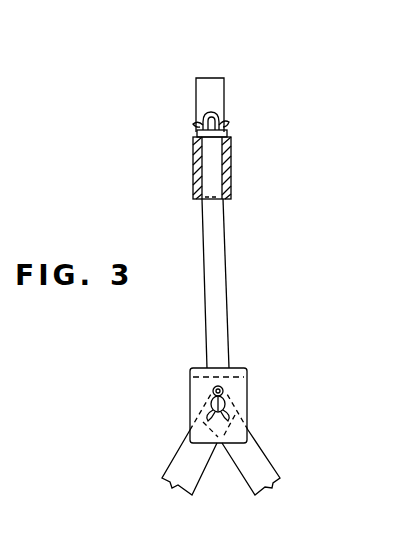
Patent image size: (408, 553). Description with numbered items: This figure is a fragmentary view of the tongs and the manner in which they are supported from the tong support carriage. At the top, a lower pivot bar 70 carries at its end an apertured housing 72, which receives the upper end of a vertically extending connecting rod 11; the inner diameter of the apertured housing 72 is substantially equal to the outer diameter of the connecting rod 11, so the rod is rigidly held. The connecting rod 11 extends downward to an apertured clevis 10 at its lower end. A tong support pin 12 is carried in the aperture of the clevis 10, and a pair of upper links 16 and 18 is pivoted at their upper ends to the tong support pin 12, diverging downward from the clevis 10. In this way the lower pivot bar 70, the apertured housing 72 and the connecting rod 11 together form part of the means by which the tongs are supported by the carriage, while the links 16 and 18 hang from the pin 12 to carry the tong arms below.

The lower pivot bar 70 is at (207, 86).
The apertured housing 72 is at (193, 170).
The connecting rod 11 is at (204, 253).
The apertured clevis 10 is at (190, 380).
The tong support pin 12 is at (226, 399).
The upper link 16 is at (262, 460).
The upper link 18 is at (175, 457).